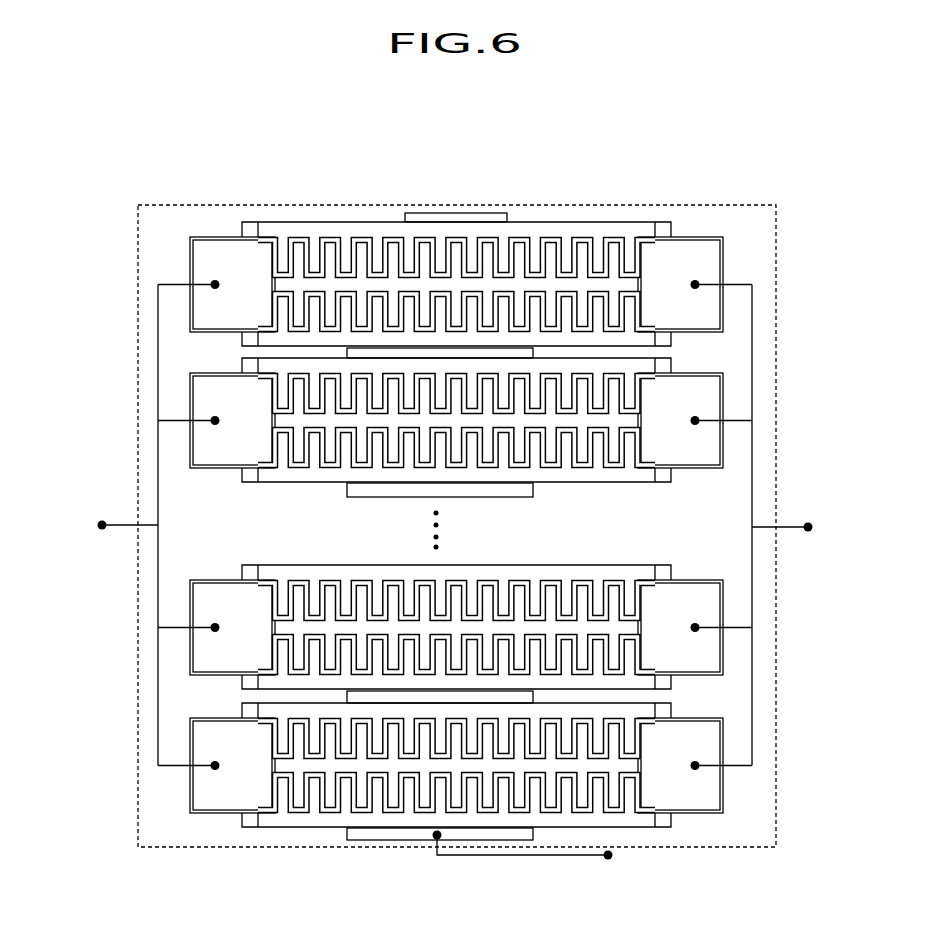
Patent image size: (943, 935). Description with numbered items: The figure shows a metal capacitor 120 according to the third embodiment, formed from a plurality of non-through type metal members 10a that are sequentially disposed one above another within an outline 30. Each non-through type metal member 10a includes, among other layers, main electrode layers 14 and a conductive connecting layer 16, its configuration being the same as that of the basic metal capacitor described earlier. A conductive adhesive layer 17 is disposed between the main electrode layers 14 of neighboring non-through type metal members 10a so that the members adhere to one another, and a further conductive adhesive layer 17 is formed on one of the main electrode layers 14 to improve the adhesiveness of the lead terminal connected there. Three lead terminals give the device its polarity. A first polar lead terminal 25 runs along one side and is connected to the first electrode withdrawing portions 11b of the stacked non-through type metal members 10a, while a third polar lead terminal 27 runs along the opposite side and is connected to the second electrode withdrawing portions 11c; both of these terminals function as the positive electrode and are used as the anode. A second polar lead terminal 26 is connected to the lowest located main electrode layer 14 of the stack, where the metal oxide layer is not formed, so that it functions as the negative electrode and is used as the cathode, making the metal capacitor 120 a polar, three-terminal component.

The metal capacitor 120 is at (400, 137).
The substrate boundary 30 is at (672, 205).
The conductive connecting layer 16 is at (456, 213).
The main electrode layer 14 is at (287, 828).
The non-through type metal member 10a is at (172, 259).
The first electrode withdrawing portion 11b is at (213, 304).
The second electrode withdrawing portion 11c is at (697, 262).
The conductive adhesive layer 17 is at (523, 353).
The first polar lead terminal 25 is at (102, 525).
The third polar lead terminal 27 is at (808, 527).
The second polar lead terminal 26 is at (608, 855).